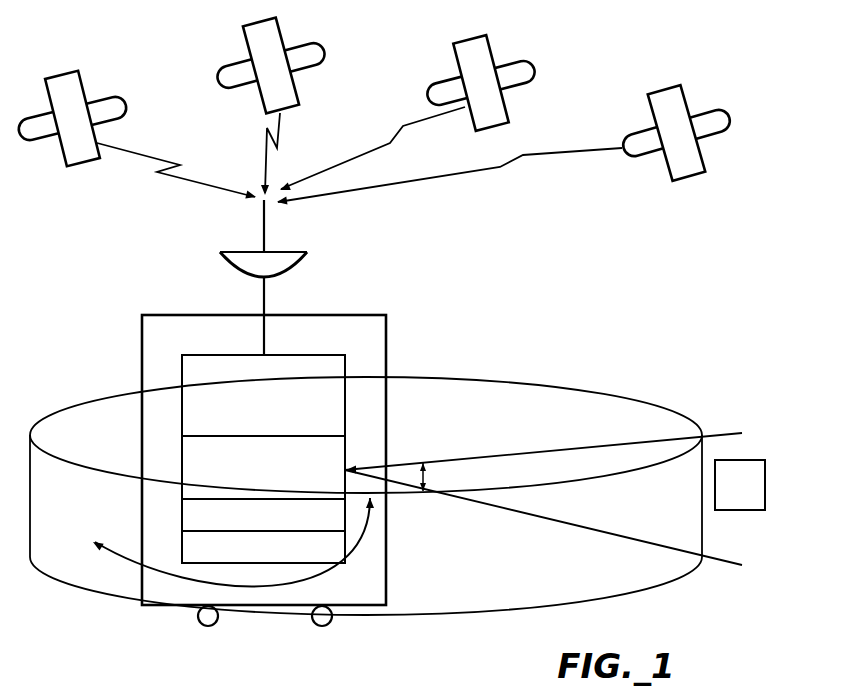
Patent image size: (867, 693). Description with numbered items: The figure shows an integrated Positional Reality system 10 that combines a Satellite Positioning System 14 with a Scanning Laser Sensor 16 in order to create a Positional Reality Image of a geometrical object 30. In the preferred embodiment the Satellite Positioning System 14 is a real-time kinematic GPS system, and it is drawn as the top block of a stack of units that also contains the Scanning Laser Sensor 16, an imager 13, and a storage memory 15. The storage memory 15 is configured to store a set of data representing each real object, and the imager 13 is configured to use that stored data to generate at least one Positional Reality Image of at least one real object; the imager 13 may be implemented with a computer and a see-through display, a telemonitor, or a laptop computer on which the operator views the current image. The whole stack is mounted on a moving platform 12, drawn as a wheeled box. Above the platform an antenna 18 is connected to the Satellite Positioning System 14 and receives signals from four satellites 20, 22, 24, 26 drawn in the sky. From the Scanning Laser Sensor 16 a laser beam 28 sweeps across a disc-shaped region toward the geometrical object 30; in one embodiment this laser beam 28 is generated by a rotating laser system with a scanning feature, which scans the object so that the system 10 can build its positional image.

The Positional Reality system 10 is at (703, 600).
The moving platform 12 is at (165, 618).
The imager 13 is at (182, 513).
The Satellite Positioning System 14 is at (182, 366).
The storage memory 15 is at (182, 545).
The Scanning Laser Sensor 16 is at (182, 455).
The antenna 18 is at (284, 251).
The satellite 20 is at (83, 88).
The satellite 22 is at (285, 40).
The satellite 24 is at (492, 52).
The satellite 26 is at (690, 103).
The laser beam 28 is at (486, 475).
The geometrical object 30 is at (750, 460).